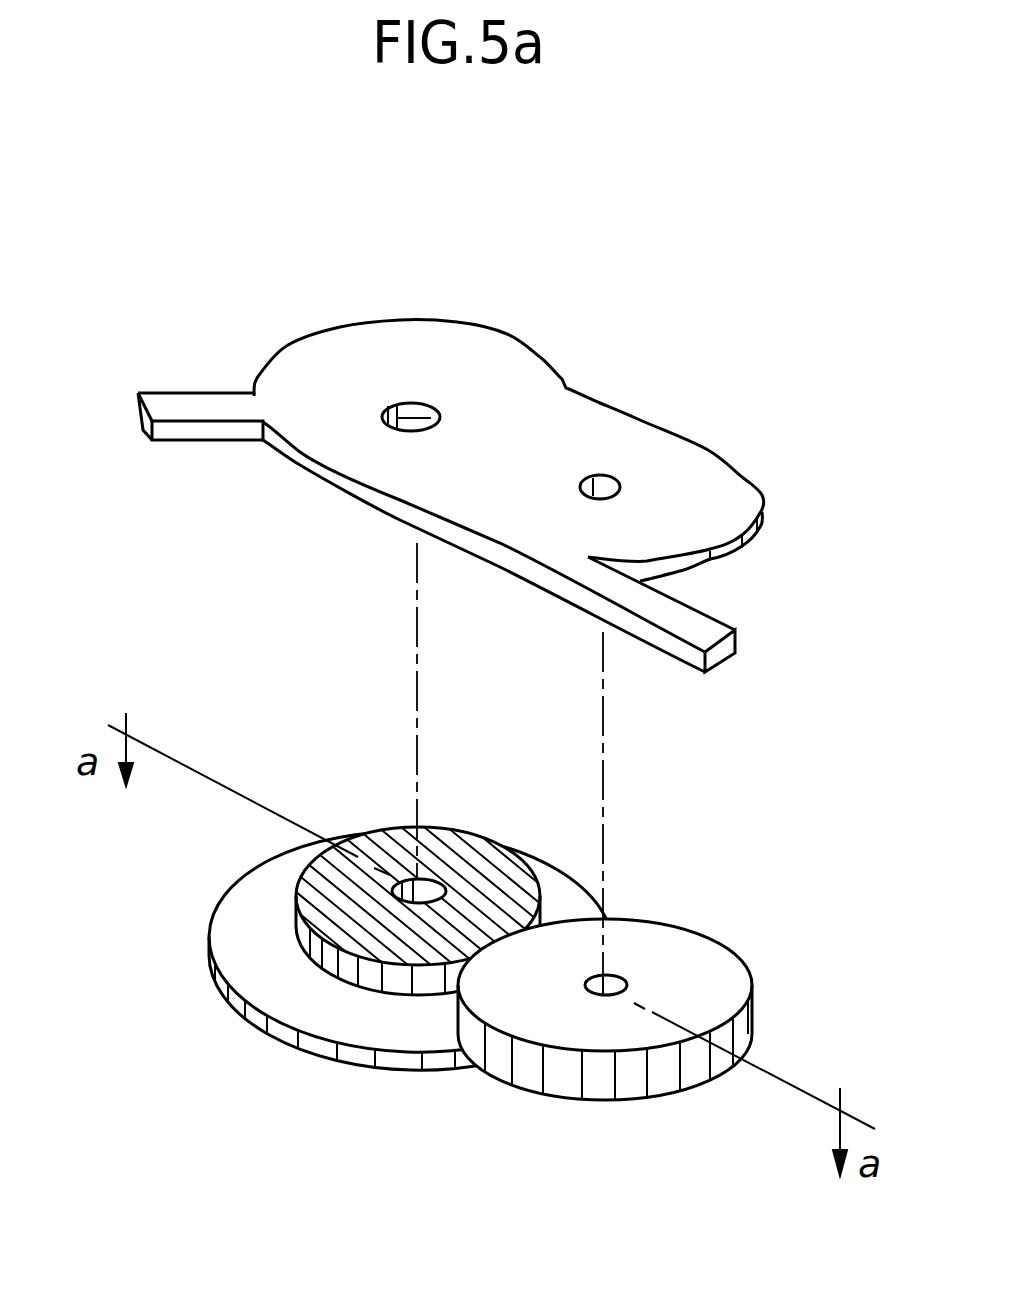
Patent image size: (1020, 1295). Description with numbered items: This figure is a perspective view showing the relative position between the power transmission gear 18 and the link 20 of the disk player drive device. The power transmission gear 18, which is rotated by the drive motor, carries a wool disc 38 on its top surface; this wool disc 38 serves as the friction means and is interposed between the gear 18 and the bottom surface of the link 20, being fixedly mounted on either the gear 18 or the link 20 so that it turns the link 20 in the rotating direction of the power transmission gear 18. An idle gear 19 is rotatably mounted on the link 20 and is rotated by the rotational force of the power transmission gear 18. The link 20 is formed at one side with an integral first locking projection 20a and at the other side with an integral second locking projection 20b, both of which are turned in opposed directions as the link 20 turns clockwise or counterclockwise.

The power transmission gear 18 is at (220, 913).
The idle gear 19 is at (694, 958).
The link 20 is at (378, 497).
The first locking projection 20a is at (198, 430).
The second locking projection 20b is at (665, 643).
The wool disc 38 is at (357, 857).